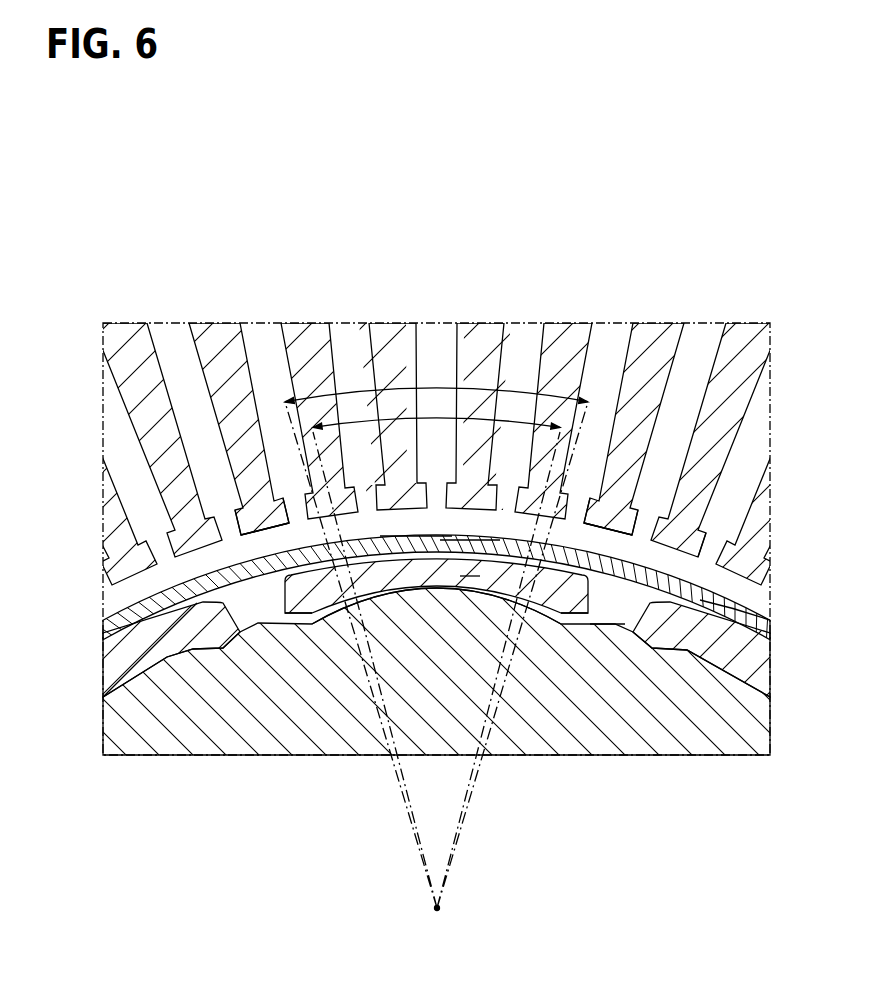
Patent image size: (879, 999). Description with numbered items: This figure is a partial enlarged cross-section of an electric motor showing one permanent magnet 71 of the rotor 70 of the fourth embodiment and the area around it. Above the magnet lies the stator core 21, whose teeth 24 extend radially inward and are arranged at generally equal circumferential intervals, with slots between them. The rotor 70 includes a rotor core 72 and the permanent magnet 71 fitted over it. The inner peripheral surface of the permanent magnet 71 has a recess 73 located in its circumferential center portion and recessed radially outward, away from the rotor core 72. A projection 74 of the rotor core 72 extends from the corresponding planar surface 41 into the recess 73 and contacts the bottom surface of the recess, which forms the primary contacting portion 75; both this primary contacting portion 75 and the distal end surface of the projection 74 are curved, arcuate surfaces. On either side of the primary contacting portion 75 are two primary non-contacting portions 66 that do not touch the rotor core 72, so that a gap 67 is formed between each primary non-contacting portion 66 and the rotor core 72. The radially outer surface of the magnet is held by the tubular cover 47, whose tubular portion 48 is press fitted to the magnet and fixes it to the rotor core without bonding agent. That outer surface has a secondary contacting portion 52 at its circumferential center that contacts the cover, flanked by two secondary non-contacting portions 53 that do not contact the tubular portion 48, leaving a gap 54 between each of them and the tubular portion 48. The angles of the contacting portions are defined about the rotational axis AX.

The stator core 21 is at (213, 325).
The teeth 24 is at (228, 415).
The gap 54 is at (287, 524).
The secondary non-contacting portion 53 is at (250, 532).
The permanent magnet 71 is at (416, 552).
The secondary contacting portion 52 is at (463, 540).
The rotor 70 is at (160, 598).
The tubular cover 47 is at (740, 573).
The tubular portion 48 is at (742, 621).
The rotor core 72 is at (235, 712).
The gap 67 is at (322, 624).
The primary non-contacting portion 66 is at (332, 615).
The primary contacting portion 75 is at (423, 588).
The recess 73 is at (357, 597).
The projection 74 is at (461, 573).
The planar surface 41 is at (592, 625).
The rotational axis AX is at (442, 910).